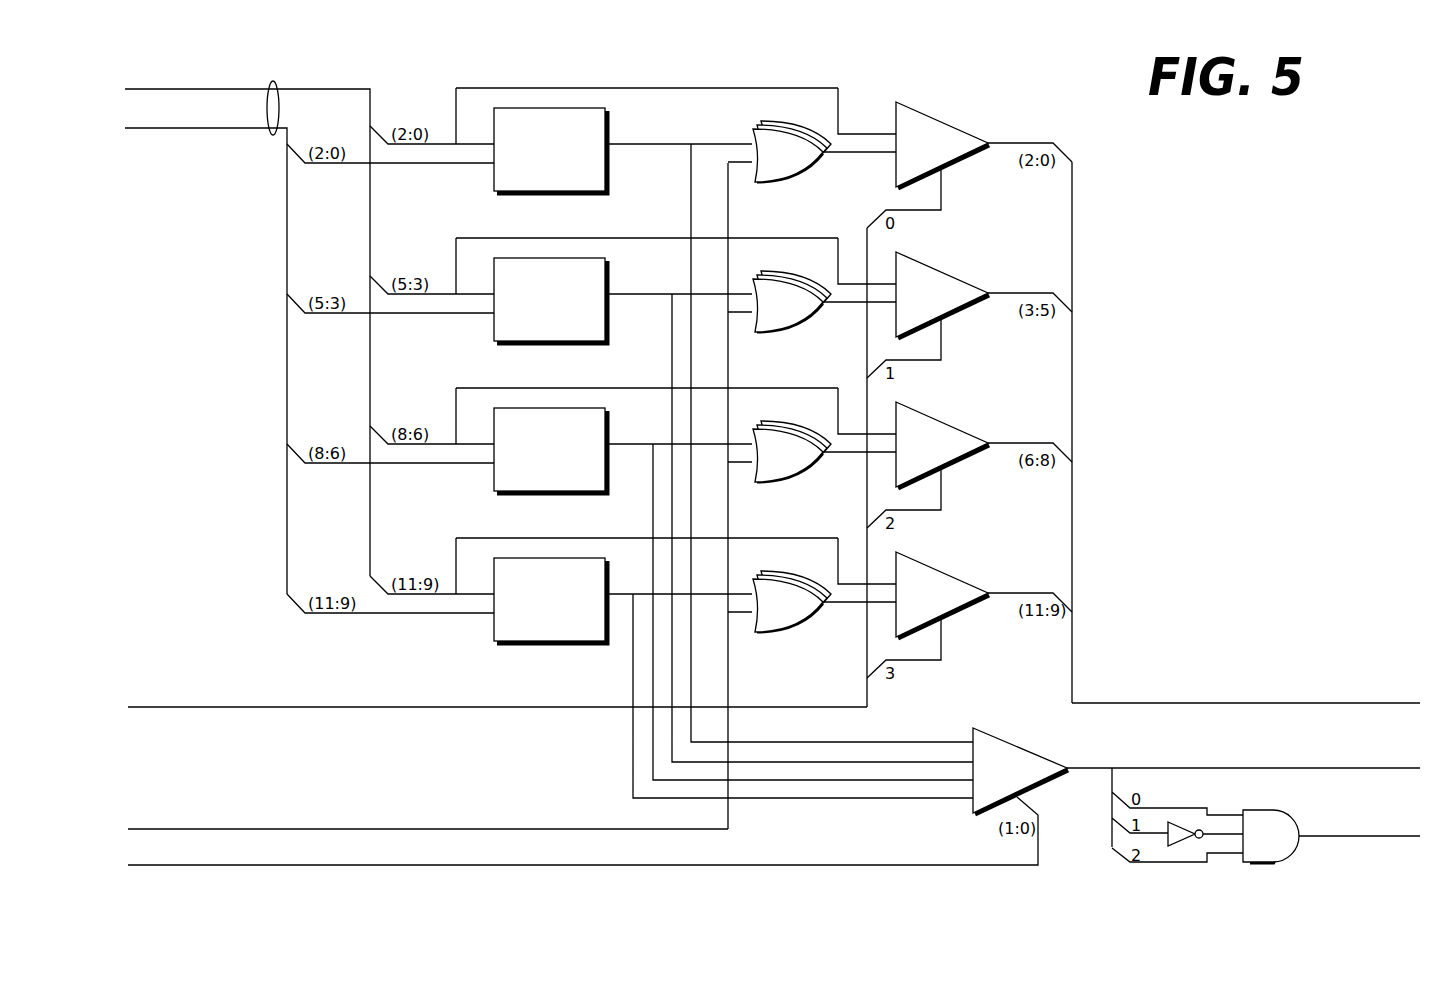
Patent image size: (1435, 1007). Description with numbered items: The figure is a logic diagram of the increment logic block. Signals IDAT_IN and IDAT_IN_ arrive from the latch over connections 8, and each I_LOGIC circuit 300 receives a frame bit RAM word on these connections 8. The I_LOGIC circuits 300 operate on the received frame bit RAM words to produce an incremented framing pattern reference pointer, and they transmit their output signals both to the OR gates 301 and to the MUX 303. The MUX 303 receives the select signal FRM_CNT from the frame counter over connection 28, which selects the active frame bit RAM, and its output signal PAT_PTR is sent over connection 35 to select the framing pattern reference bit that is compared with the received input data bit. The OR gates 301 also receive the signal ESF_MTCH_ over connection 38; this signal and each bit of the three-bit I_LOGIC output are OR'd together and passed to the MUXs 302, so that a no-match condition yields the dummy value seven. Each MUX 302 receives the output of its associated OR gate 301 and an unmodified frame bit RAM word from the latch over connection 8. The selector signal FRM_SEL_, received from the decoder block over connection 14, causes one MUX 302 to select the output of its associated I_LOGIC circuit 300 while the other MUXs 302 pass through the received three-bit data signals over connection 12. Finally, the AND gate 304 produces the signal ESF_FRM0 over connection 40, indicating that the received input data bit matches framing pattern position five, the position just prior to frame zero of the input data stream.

The connections 8 is at (268, 133).
The connection 12 is at (1183, 703).
The connection 14 is at (280, 707).
The connection 28 is at (353, 867).
The connection 35 is at (1205, 768).
The connection 38 is at (337, 829).
The connection 40 is at (1348, 836).
The I_LOGIC circuits 300 is at (548, 79).
The OR gates 301 is at (782, 79).
The MUXs 302 is at (932, 107).
The MUX 303 is at (1030, 750).
The AND gate 304 is at (1262, 866).